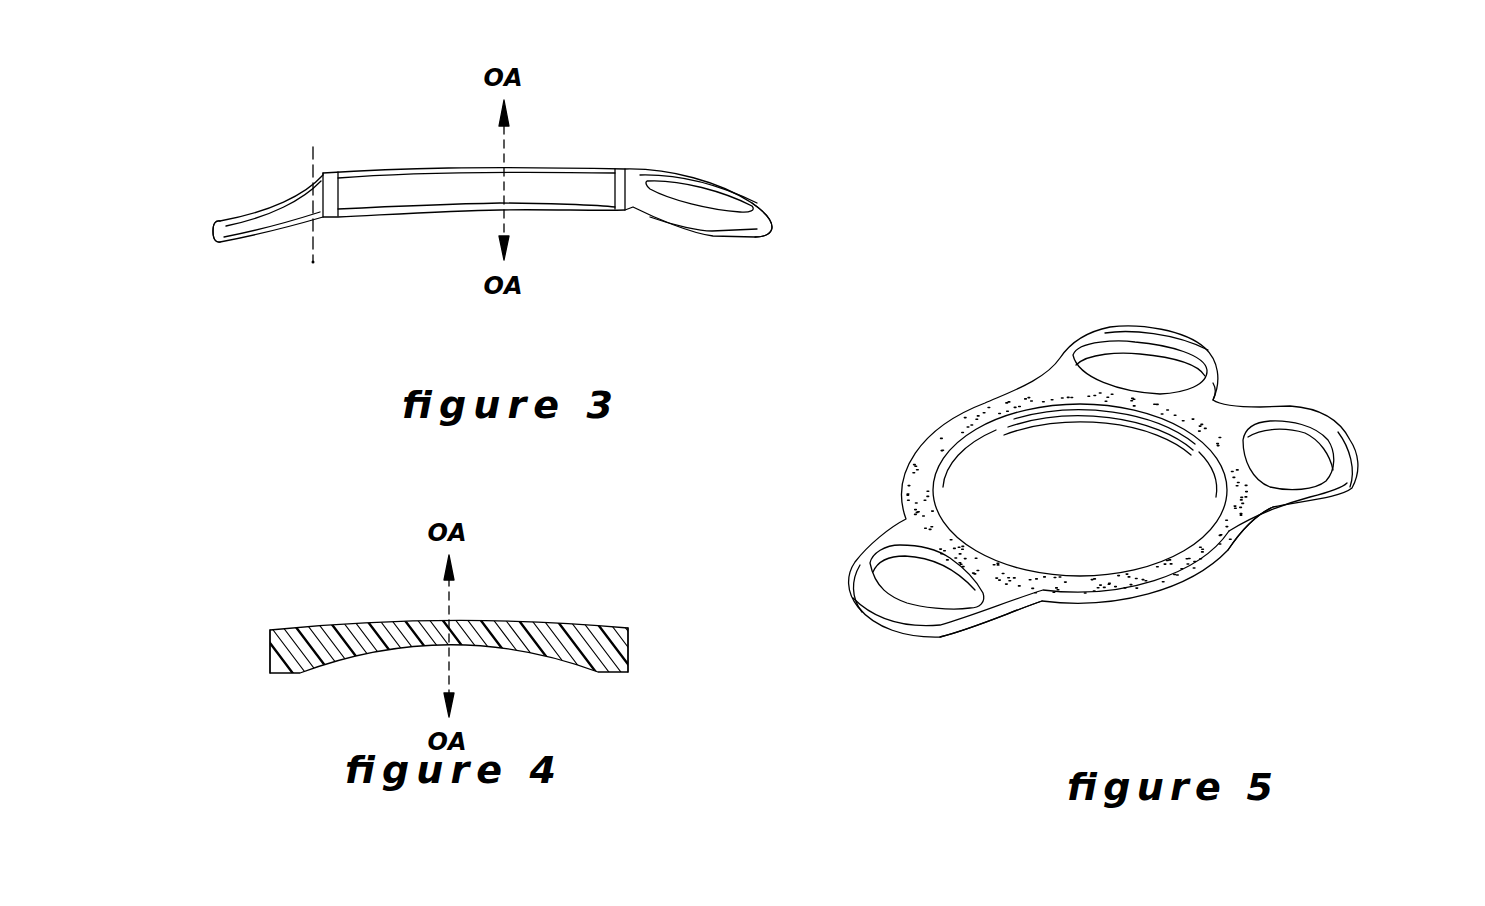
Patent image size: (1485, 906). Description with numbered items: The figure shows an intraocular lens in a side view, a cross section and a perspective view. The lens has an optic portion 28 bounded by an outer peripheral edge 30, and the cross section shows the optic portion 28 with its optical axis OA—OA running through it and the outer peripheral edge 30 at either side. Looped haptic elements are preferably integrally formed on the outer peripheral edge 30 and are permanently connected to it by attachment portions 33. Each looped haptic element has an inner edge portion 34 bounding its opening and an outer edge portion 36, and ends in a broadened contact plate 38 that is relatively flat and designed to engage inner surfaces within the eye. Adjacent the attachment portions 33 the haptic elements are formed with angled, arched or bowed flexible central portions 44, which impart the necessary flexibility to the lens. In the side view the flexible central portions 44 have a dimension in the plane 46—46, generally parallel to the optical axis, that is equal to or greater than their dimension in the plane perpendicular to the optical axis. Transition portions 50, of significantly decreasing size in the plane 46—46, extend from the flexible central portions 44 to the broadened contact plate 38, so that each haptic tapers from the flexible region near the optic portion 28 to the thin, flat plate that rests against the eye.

In FIG. 3, the optic portion 28 is at (520, 167).
In FIG. 4, the optic portion 28 is at (497, 622).
In FIG. 5, the optic portion 28 is at (1062, 503).
In FIG. 3, the outer peripheral edge 30 is at (448, 190).
In FIG. 4, the outer peripheral edge 30 is at (270, 649).
In FIG. 5, the outer peripheral edge 30 is at (955, 437).
In FIG. 3, the attachment portions 33 is at (633, 198).
In FIG. 5, the attachment portions 33 is at (927, 530).
In FIG. 3, the inner edge portion 34 is at (697, 193).
In FIG. 5, the inner edge portion 34 is at (1087, 337).
In FIG. 5, the outer edge portion 36 is at (1215, 353).
In FIG. 3, the contact plate 38 is at (230, 222).
In FIG. 5, the contact plate 38 is at (1147, 333).
In FIG. 3, the flexible central portions 44 is at (323, 220).
In FIG. 5, the flexible central portions 44 is at (1313, 503).
In FIG. 3, the plane 46— 46 is at (311, 204).
In FIG. 3, the transition portions 50 is at (268, 221).
In FIG. 5, the transition portions 50 is at (1303, 410).